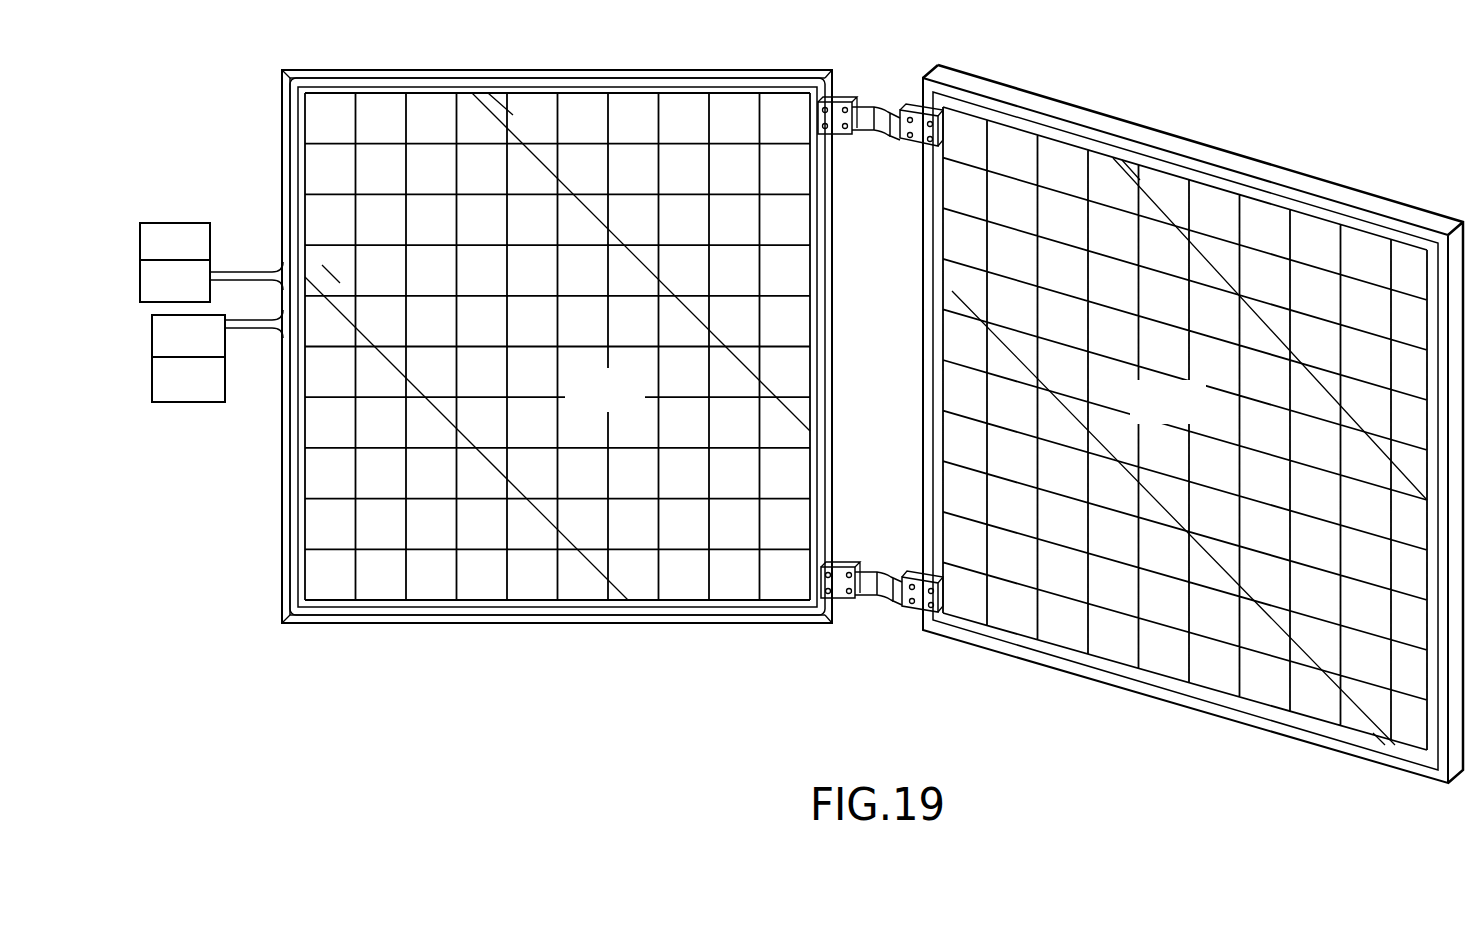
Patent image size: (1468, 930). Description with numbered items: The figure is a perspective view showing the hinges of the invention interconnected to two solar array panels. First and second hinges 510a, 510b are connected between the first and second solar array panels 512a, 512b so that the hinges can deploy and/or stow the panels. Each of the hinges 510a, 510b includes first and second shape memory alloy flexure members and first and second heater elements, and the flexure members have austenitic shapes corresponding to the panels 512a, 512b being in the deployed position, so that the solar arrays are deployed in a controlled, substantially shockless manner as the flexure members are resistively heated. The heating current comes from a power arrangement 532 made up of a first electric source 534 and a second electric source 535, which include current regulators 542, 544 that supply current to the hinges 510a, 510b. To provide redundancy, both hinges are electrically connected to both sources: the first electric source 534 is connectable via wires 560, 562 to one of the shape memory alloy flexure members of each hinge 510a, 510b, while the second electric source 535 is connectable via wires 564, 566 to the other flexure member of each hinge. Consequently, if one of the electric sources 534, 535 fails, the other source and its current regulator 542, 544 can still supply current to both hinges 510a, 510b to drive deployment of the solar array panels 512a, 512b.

The first hinge 510a is at (881, 100).
The second hinge 510b is at (885, 565).
The first solar array panel 512a is at (630, 402).
The second solar array panel 512b is at (1192, 416).
The control system 532 is at (210, 256).
The first electric source 534 is at (192, 253).
The second electric source 535 is at (205, 392).
The current regulator 542 is at (192, 293).
The current regulator 544 is at (205, 351).
The wire 560 is at (283, 493).
The wire 562 is at (283, 125).
The wire 564 is at (345, 71).
The wire 566 is at (452, 624).